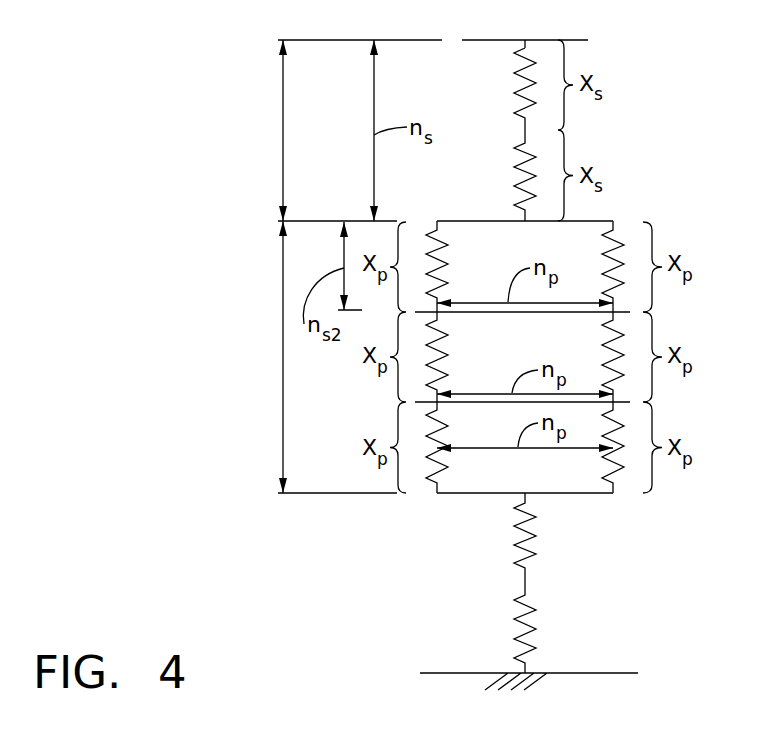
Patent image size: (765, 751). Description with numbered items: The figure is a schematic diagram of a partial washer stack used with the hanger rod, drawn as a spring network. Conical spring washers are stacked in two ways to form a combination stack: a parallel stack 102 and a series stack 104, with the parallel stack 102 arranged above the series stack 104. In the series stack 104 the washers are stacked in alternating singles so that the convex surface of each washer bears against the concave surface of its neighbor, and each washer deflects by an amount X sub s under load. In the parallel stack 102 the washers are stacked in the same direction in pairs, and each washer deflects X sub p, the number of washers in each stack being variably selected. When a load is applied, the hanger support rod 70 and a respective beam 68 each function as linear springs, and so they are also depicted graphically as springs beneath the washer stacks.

The series stack 104 is at (283, 136).
The parallel stack 102 is at (283, 356).
The hanger support rod 70 is at (557, 493).
The beam 68 is at (557, 580).